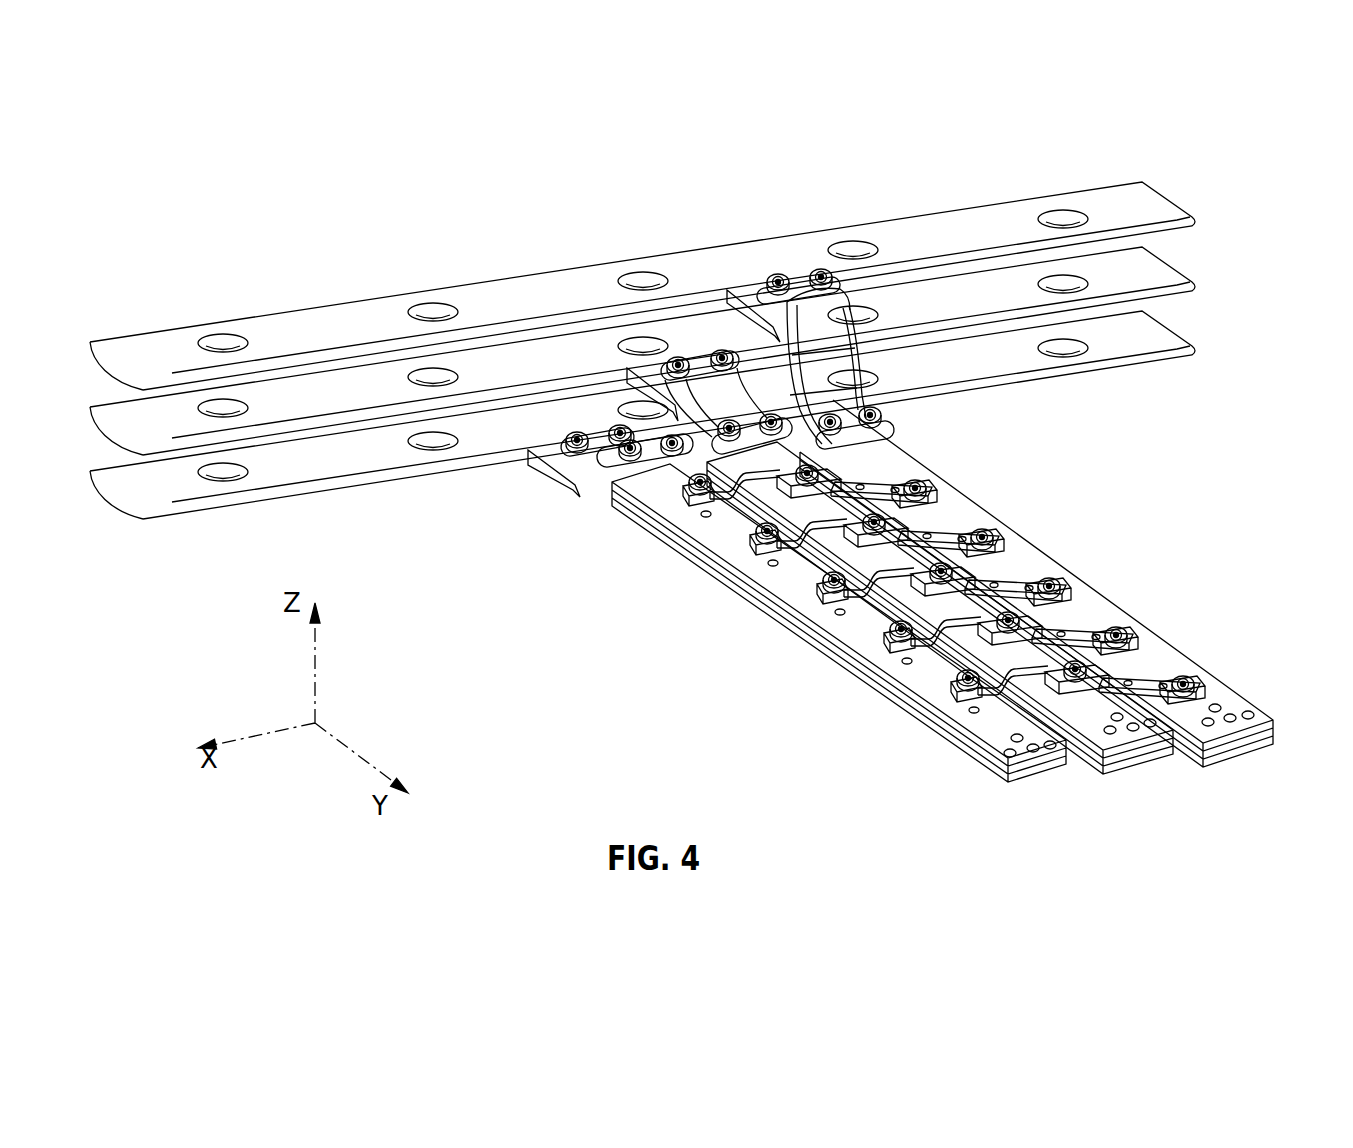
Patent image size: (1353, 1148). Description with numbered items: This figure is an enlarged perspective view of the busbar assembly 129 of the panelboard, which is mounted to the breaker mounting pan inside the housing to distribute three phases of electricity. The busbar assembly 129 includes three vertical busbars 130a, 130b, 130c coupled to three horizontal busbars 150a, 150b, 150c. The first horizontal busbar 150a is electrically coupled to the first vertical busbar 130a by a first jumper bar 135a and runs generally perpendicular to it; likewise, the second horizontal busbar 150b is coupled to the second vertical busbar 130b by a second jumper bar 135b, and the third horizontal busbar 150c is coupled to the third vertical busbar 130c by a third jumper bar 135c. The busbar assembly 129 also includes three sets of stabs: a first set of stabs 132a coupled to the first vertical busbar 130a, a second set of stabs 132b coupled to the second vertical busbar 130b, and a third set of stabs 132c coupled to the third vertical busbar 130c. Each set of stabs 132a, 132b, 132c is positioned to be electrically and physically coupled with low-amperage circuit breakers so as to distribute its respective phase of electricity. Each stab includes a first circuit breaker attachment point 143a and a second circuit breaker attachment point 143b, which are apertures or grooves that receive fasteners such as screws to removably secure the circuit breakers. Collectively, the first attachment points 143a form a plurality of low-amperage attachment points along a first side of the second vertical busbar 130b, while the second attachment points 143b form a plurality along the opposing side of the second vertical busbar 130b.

The busbar assembly 129 is at (335, 205).
The first vertical busbar 130a is at (1243, 740).
The second vertical busbar 130b is at (1138, 748).
The third vertical busbar 130c is at (1037, 775).
The first set of stabs 132a is at (868, 485).
The second set of stabs 132b is at (924, 535).
The third set of stabs 132c is at (770, 473).
The first jumper bar 135a is at (813, 317).
The second jumper bar 135b is at (705, 383).
The third jumper bar 135c is at (597, 437).
The first circuit breaker attachment point 143a is at (1117, 633).
The second circuit breaker attachment point 143b is at (1037, 665).
The first horizontal busbar 150a is at (1180, 200).
The second horizontal busbar 150b is at (1180, 265).
The third horizontal busbar 150c is at (1180, 330).